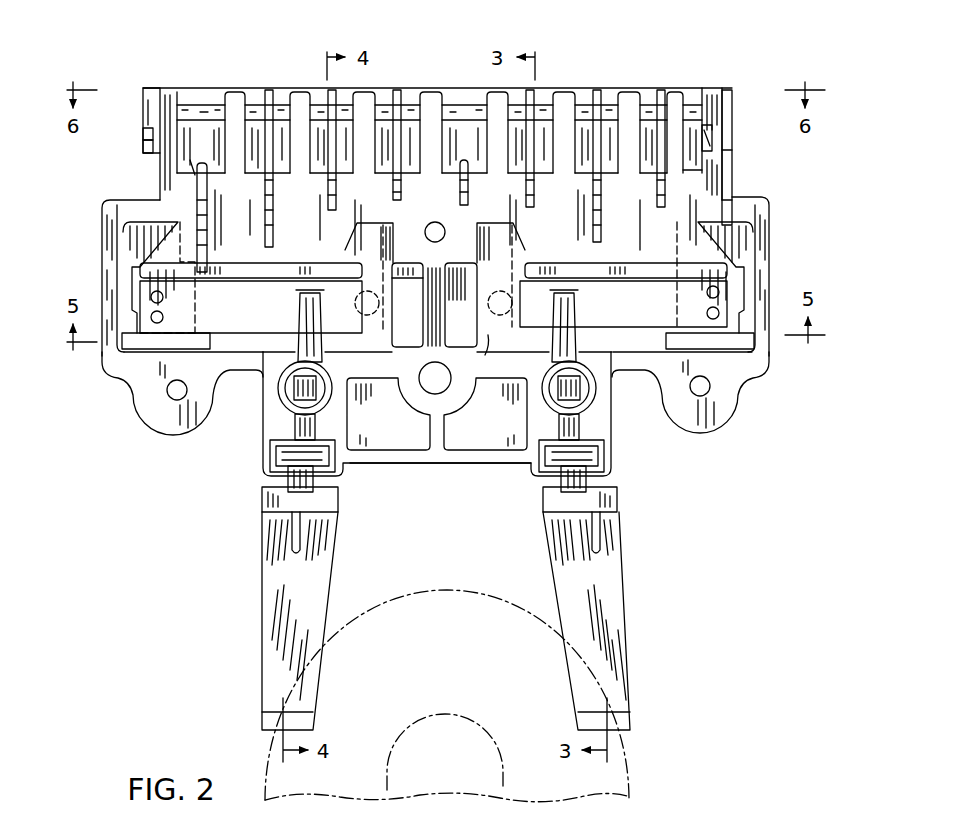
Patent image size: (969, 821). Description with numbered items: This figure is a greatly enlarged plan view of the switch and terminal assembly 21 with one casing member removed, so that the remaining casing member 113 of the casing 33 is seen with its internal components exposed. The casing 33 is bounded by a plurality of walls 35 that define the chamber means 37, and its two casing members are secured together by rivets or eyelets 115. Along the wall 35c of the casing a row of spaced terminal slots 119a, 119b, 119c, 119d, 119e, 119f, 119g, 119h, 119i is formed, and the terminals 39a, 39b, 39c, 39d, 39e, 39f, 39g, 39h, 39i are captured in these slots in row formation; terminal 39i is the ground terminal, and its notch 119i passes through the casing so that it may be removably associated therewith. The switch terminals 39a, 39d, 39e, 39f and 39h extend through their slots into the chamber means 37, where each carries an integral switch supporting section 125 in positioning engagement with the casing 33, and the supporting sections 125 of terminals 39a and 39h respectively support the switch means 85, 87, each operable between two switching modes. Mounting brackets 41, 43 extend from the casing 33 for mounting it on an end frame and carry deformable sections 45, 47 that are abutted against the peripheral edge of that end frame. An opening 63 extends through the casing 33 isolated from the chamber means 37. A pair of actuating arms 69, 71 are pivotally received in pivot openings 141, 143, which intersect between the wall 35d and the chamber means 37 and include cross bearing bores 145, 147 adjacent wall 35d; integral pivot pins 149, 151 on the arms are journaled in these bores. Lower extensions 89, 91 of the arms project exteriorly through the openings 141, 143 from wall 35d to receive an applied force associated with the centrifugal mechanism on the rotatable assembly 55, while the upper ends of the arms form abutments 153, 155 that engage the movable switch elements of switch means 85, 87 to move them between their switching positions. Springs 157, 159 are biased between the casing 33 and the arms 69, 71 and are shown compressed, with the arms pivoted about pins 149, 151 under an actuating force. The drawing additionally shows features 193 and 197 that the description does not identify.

The switch and terminal assembly 21 is at (175, 464).
The casing 33 is at (726, 400).
The walls 35 is at (736, 458).
The casing wall 35c is at (190, 160).
The casing wall 35d is at (422, 466).
The chamber means 37 is at (130, 240).
The switch terminal 39a is at (223, 162).
The terminal 39b is at (281, 140).
The terminal 39c is at (342, 114).
The switch terminal 39d is at (423, 117).
The switch terminal 39e is at (472, 132).
The switch terminal 39f is at (555, 120).
The terminal 39g is at (622, 138).
The switch terminal 39h is at (660, 120).
The ground terminal 39i is at (763, 136).
The mounting bracket 41 is at (147, 90).
The mounting bracket 43 is at (710, 95).
The deformable section 45 is at (142, 142).
The deformable section 47 is at (715, 132).
The rotatable assembly 55 is at (668, 769).
The opening 63 is at (423, 388).
The actuating arm 69 is at (262, 502).
The actuating arm 71 is at (618, 502).
The switch means 85 is at (203, 311).
The switch means 87 is at (628, 311).
The extension 89 is at (262, 673).
The extension 91 is at (630, 670).
The casing member 113 is at (767, 205).
The rivets or eyelets 115 is at (168, 396).
The terminal slot 119a is at (207, 190).
The terminal slot 119b is at (273, 210).
The terminal slot 119c is at (336, 200).
The terminal slot 119d is at (401, 198).
The terminal slot 119e is at (468, 200).
The terminal slot 119f is at (534, 200).
The terminal slot 119g is at (601, 215).
The terminal slot 119h is at (660, 172).
The ground terminal notch 119i is at (735, 205).
The switch supporting section 125 is at (148, 268).
The pivot opening 141 is at (283, 397).
The pivot opening 143 is at (592, 397).
The bearing bore 145 is at (270, 447).
The bearing bore 147 is at (604, 460).
The pivot pin 149 is at (270, 460).
The pivot pin 151 is at (604, 447).
The abutment 153 is at (300, 320).
The abutment 155 is at (566, 305).
The spring 157 is at (522, 426).
The spring 159 is at (352, 432).
The boss 193 is at (500, 765).
The edge 197 is at (628, 793).